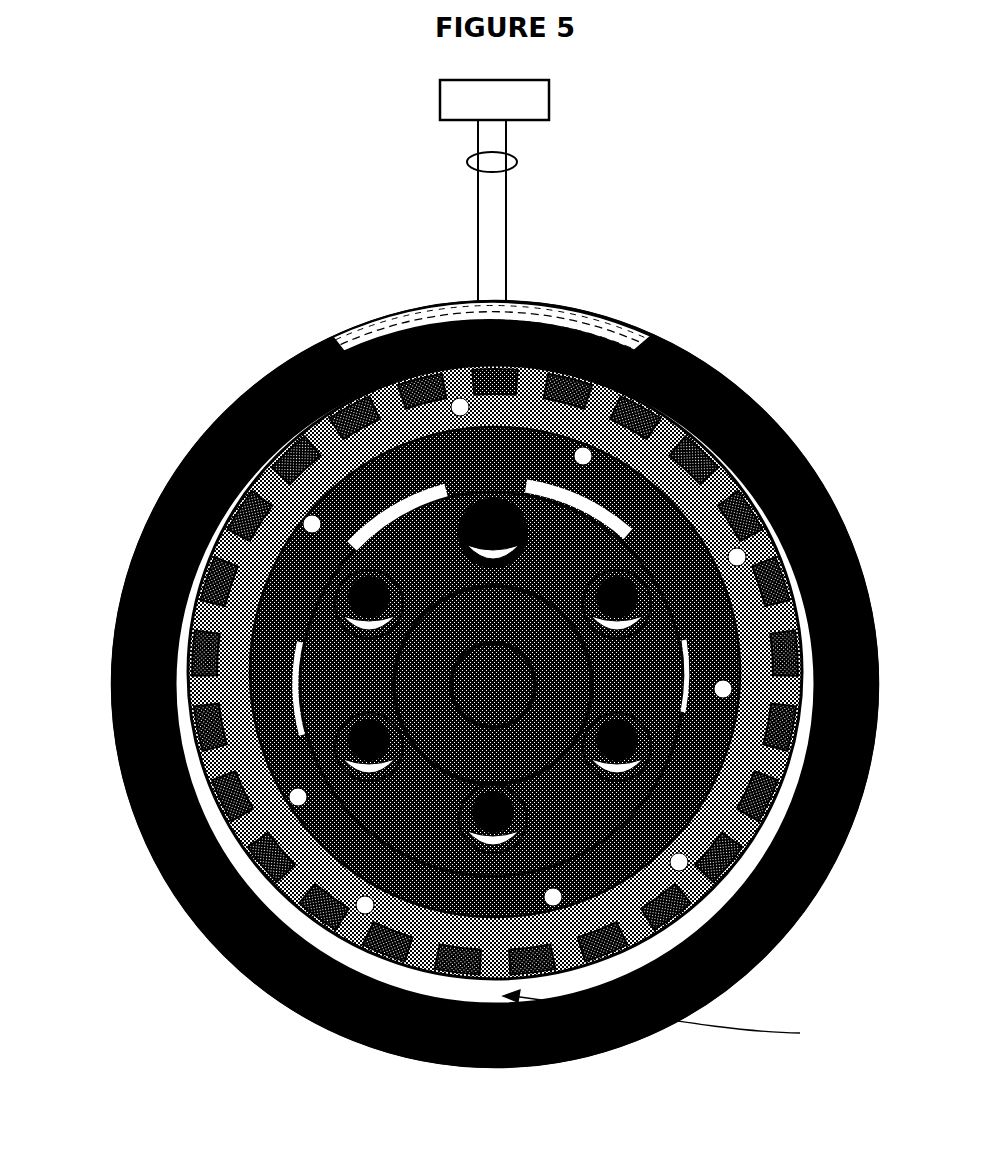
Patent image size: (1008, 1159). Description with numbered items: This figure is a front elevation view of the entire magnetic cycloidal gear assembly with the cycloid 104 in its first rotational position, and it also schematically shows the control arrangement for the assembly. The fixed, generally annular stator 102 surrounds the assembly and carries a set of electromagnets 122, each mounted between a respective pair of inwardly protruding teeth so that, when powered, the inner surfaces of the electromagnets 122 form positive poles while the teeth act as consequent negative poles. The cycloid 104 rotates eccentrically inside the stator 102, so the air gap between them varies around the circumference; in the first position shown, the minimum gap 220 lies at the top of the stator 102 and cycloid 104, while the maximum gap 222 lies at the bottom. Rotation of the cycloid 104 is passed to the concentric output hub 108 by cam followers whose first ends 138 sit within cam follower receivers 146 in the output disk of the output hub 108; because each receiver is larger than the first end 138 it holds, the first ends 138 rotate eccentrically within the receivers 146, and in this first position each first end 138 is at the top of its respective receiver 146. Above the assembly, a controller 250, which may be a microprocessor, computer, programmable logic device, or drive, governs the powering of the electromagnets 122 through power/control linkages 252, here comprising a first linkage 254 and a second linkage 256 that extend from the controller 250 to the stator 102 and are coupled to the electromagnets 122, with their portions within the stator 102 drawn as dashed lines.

The stator 102 is at (502, 684).
The cycloid 104 is at (760, 540).
The output hub 108 is at (327, 713).
The electromagnets 122 is at (747, 397).
The first end 138 is at (343, 617).
The cam follower receivers 146 is at (357, 580).
The minimum gap 220 is at (460, 305).
The maximum gap 222 is at (676, 1019).
The controller 250 is at (552, 98).
The power/control linkages 252 is at (520, 158).
The first linkage 254 is at (481, 211).
The second linkage 256 is at (478, 218).